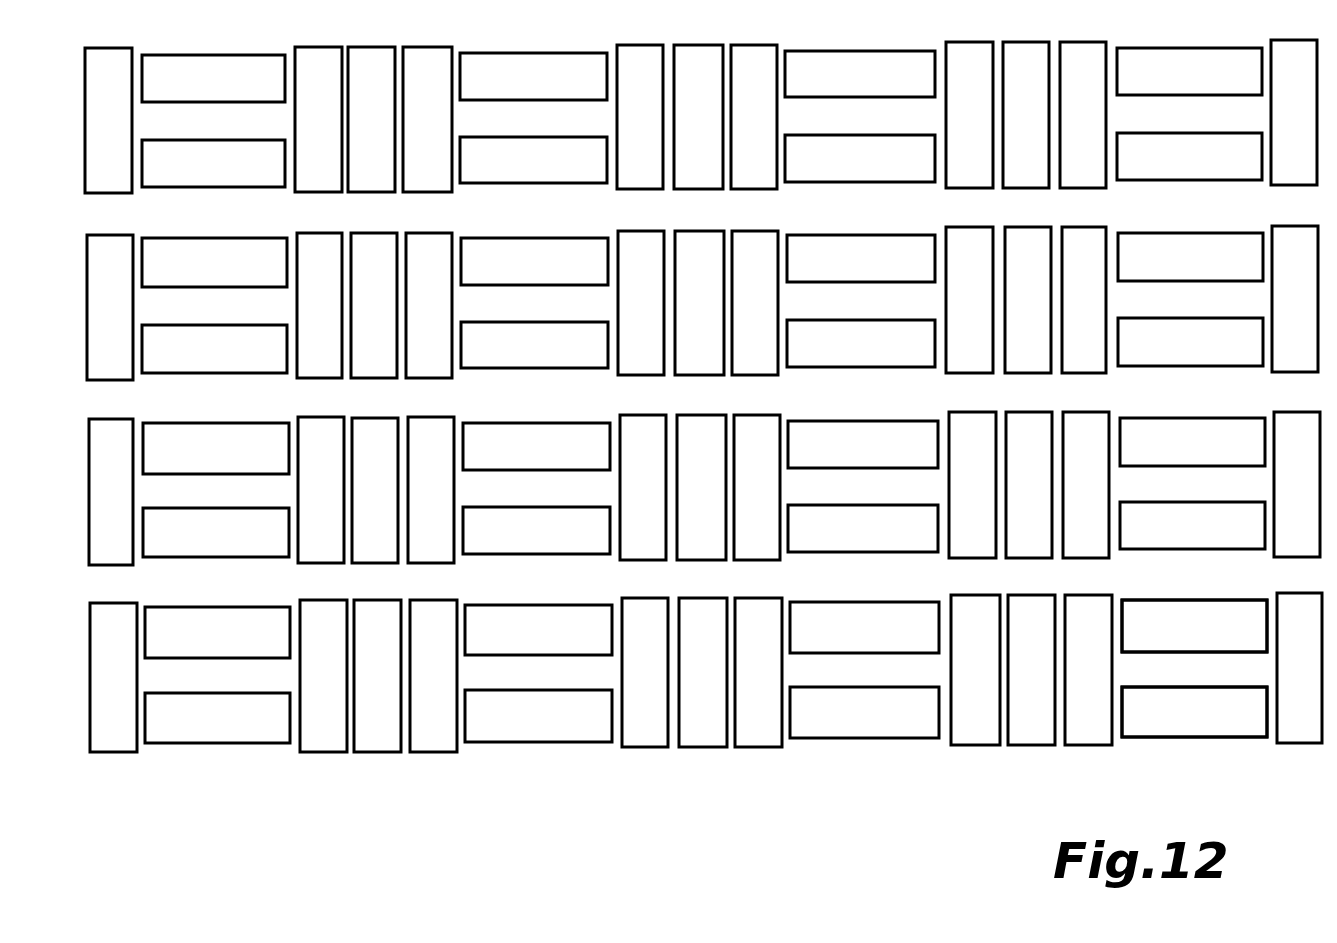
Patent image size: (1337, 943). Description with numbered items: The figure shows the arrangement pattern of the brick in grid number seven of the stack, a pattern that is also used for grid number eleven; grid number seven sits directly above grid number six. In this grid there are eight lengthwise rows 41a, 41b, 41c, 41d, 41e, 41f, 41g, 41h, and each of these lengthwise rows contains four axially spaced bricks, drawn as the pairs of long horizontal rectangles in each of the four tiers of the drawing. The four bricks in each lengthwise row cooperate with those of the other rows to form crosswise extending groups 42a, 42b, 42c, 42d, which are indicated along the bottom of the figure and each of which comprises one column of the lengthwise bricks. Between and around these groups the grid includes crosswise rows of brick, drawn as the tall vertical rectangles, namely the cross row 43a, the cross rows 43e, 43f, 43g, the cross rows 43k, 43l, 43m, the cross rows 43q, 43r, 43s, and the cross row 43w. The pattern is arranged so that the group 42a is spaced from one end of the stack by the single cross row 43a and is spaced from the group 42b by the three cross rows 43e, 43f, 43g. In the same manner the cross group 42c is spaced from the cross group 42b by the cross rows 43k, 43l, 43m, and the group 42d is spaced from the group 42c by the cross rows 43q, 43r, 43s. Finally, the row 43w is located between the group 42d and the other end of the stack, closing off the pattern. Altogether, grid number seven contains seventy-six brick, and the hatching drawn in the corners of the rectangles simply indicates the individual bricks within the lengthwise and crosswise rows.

The lengthwise row 41a is at (1167, 53).
The lengthwise row 41b is at (1177, 145).
The lengthwise row 41c is at (842, 242).
The lengthwise row 41d is at (847, 330).
The lengthwise row 41e is at (1170, 430).
The lengthwise row 41f is at (1175, 518).
The lengthwise row 41g is at (1163, 615).
The lengthwise row 41h is at (1160, 705).
The crosswise extending group 42a is at (206, 751).
The crosswise extending group 42b is at (545, 749).
The crosswise extending group 42c is at (860, 743).
The crosswise extending group 42d is at (1190, 740).
The cross row 43a is at (106, 750).
The cross row 43e is at (319, 752).
The cross row 43f is at (372, 752).
The cross row 43g is at (430, 752).
The cross row 43k is at (643, 748).
The cross row 43l is at (701, 748).
The cross row 43m is at (758, 748).
The cross row 43q is at (979, 746).
The cross row 43r is at (1032, 746).
The cross row 43s is at (1089, 746).
The cross row 43w is at (1293, 745).